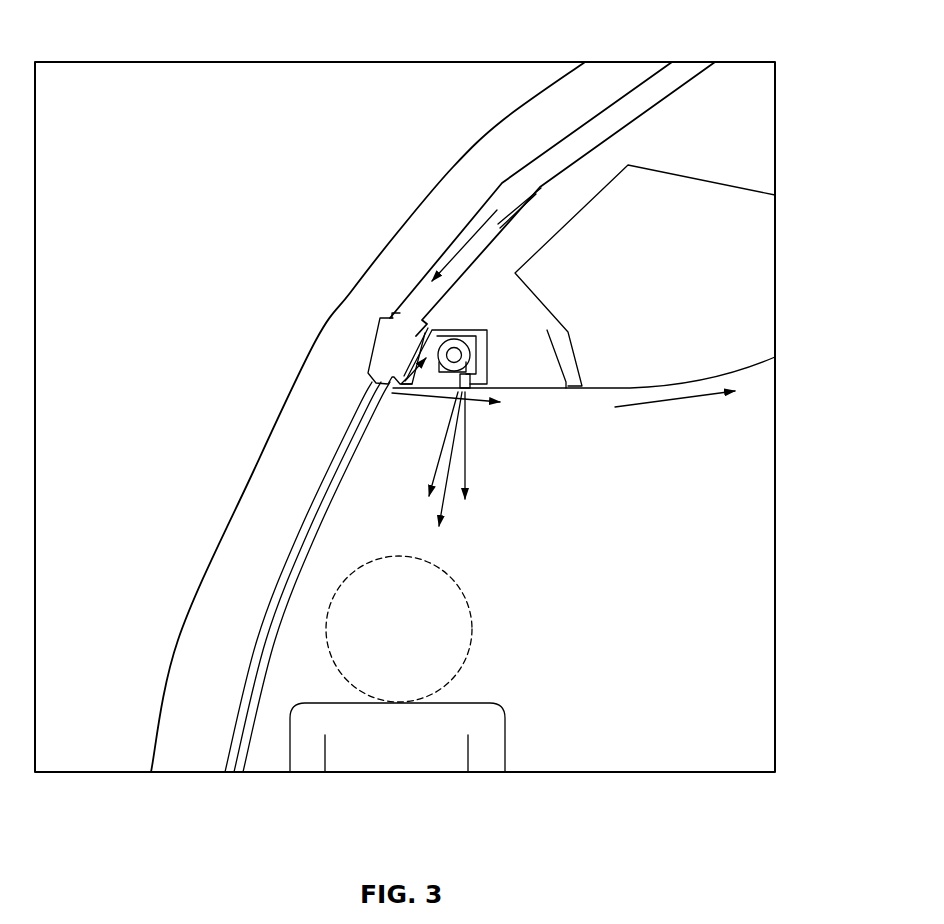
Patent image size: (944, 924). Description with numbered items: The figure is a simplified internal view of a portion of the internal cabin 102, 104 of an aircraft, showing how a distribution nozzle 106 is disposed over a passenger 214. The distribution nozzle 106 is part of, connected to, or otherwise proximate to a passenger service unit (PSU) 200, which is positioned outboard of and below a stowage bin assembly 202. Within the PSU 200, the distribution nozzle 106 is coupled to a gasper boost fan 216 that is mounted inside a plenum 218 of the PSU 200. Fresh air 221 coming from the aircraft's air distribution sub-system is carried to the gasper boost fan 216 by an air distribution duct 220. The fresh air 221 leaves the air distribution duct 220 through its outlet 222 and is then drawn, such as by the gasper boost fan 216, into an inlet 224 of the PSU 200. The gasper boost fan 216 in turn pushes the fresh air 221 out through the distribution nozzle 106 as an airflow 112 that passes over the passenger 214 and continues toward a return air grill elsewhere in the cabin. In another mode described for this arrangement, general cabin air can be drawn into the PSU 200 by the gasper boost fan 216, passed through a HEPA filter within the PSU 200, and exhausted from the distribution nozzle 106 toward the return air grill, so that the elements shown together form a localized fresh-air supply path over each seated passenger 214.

The internal cabin 102 is at (735, 466).
The internal cabin 104 is at (515, 113).
The distribution nozzle 106 is at (477, 331).
The airflow 112 is at (468, 462).
The passenger service unit 200 is at (543, 381).
The stowage bin assembly 202 is at (763, 223).
The passenger 214 is at (327, 602).
The gasper boost fan 216 is at (445, 328).
The plenum 218 is at (430, 338).
The air distribution duct 220 is at (505, 203).
The fresh air 221 is at (470, 243).
The outlet 222 is at (395, 388).
The inlet 224 is at (385, 404).